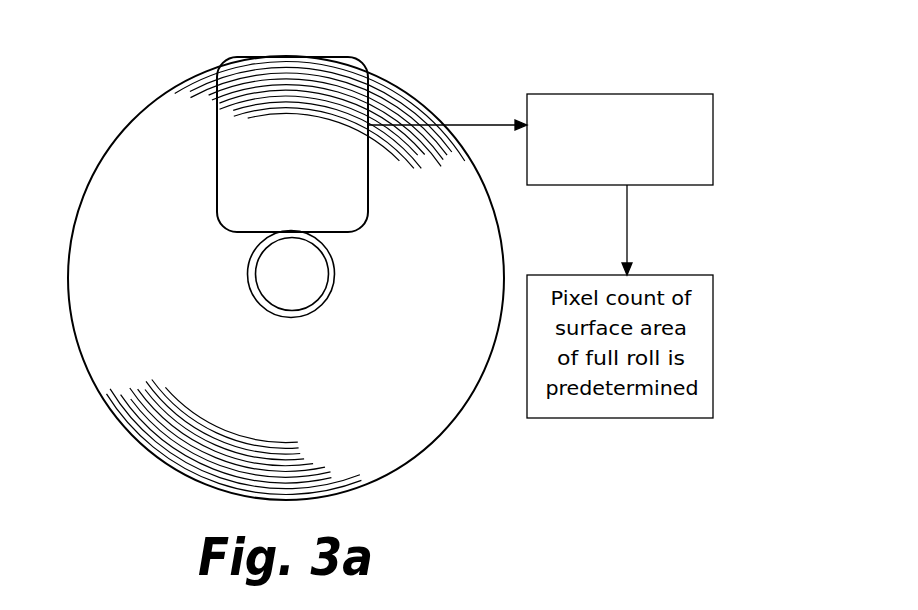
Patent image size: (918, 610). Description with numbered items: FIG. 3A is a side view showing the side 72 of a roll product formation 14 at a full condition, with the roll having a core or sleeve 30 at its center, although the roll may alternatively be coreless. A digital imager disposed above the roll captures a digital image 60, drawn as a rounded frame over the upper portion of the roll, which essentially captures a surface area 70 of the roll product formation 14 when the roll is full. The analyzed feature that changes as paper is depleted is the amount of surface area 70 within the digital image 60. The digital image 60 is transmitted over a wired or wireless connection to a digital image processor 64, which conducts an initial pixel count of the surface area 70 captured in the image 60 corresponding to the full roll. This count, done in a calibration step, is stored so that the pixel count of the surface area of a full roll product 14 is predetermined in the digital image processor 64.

The roll product formation 14 is at (150, 103).
The core or sleeve 30 is at (327, 297).
The digital image 60 is at (217, 157).
The digital image processor 64 is at (608, 93).
The surface area 70 is at (240, 189).
The side of the roll 72 is at (300, 391).